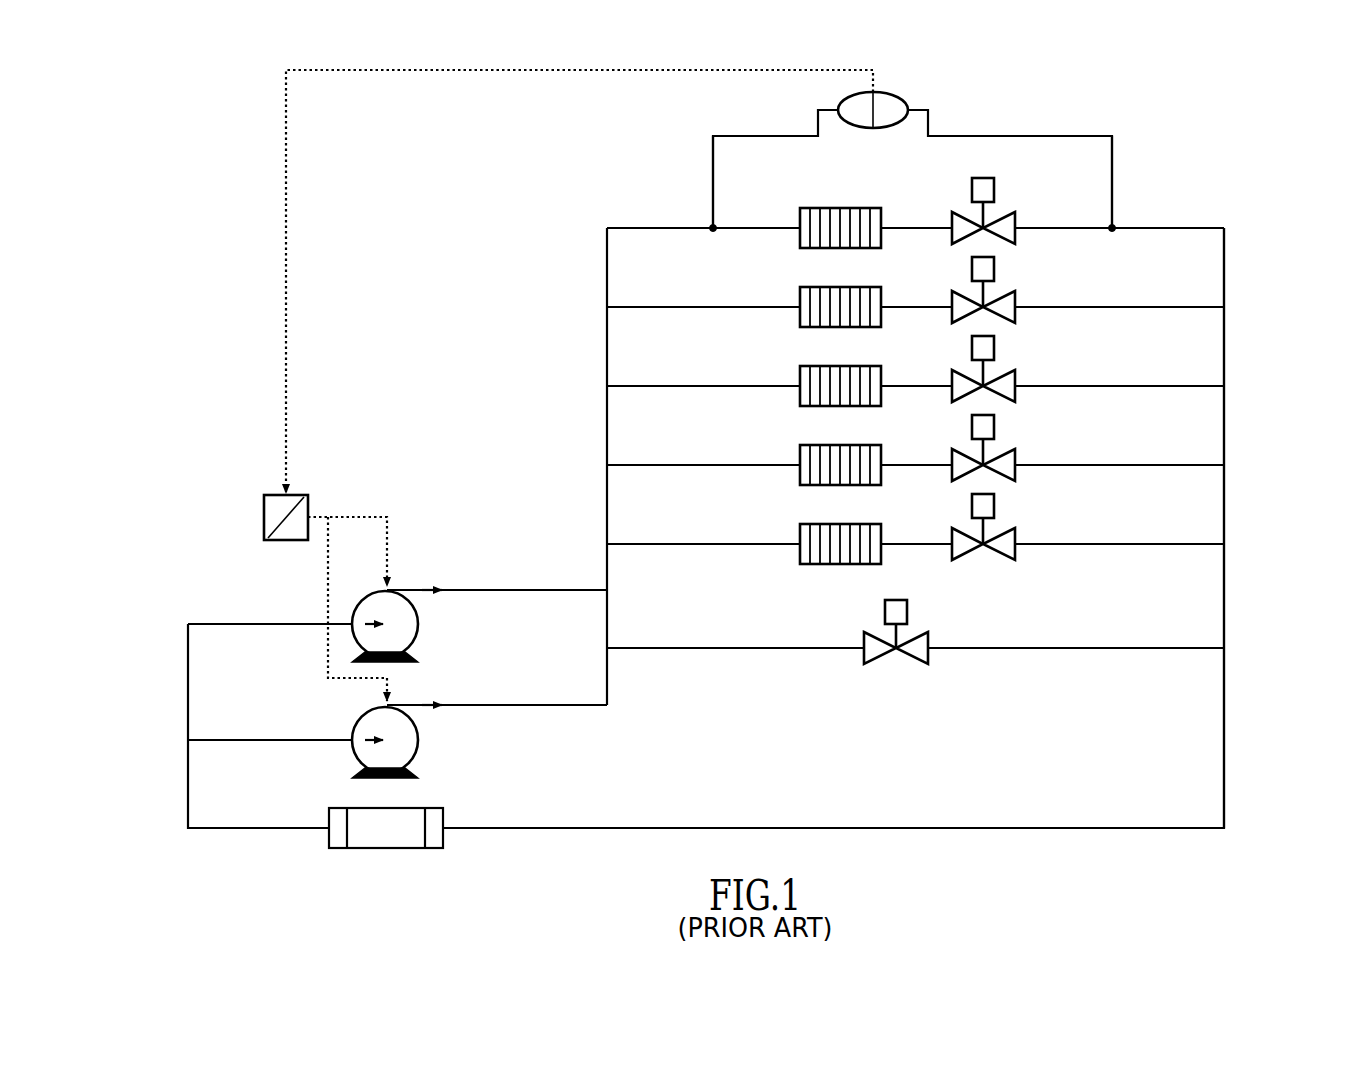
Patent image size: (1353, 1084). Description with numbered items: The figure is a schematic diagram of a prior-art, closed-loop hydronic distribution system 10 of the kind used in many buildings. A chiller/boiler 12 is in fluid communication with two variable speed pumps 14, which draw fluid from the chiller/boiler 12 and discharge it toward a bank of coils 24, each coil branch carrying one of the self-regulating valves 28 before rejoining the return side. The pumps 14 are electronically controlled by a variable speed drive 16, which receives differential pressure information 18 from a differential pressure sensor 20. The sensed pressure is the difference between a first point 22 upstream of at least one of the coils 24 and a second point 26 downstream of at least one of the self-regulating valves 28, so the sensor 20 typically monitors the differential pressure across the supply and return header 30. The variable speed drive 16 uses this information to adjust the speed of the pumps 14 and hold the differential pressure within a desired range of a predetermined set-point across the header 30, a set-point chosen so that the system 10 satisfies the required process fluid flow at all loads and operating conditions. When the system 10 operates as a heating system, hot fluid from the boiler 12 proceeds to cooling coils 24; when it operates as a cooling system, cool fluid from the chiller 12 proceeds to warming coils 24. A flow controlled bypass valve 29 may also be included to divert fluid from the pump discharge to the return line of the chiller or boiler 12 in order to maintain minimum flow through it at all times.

The hydronic distribution system 10 is at (178, 202).
The chiller/boiler 12 is at (360, 808).
The variable speed pumps 14 is at (420, 622).
The variable speed drive 16 is at (232, 494).
The differential pressure information 18 is at (287, 339).
The differential pressure sensor 20 is at (893, 97).
The first point 22 is at (712, 226).
The coils 24 is at (800, 238).
The second point 26 is at (1114, 226).
The self-regulating valves 28 is at (1015, 240).
The bypass valve 29 is at (928, 660).
The supply and return header 30 is at (1180, 226).